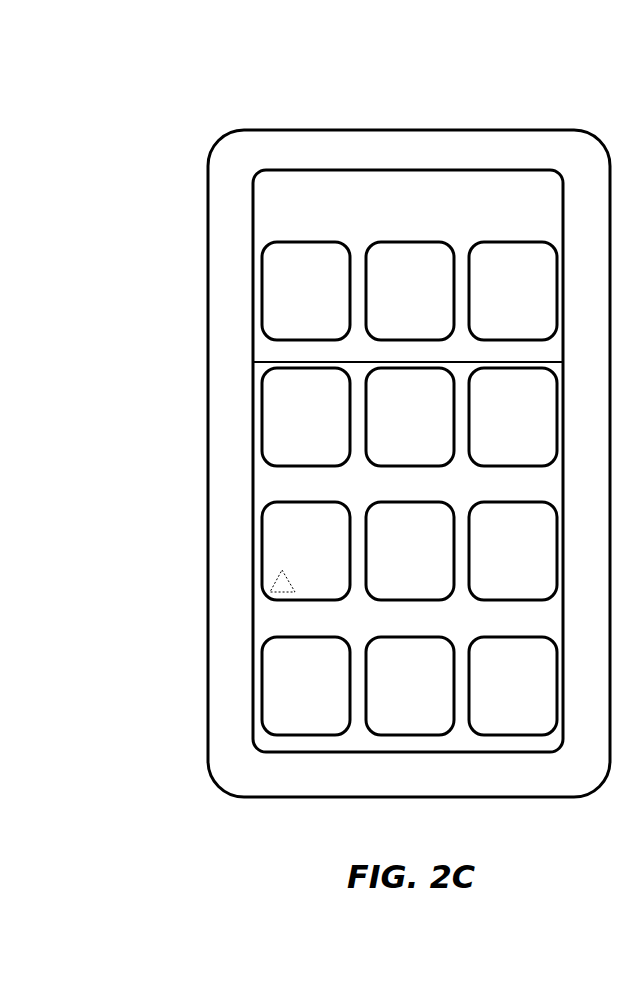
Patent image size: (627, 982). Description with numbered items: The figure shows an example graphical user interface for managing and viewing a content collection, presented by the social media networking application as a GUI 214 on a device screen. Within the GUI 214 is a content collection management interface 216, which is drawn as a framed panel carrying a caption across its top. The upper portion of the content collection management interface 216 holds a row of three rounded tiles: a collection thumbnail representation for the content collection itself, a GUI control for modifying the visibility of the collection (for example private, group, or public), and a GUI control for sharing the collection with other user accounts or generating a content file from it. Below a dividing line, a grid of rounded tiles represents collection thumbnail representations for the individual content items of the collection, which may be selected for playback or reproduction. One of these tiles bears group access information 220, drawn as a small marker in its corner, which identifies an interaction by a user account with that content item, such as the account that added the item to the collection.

The GUI 214 is at (237, 77).
The content collection management interface 216 is at (408, 461).
The group access information 220 is at (270, 590).